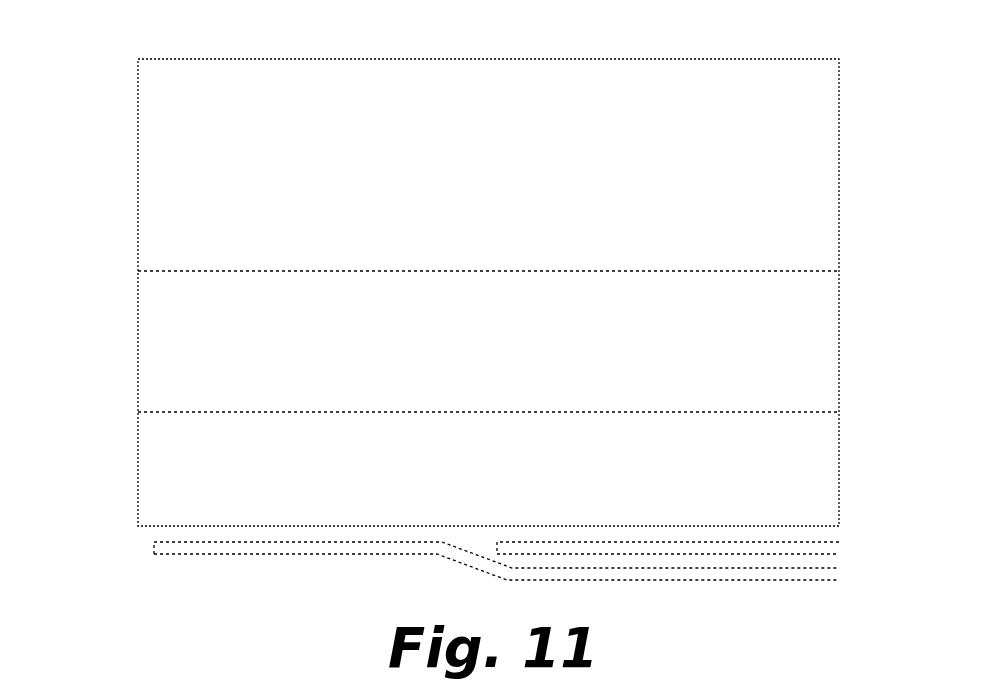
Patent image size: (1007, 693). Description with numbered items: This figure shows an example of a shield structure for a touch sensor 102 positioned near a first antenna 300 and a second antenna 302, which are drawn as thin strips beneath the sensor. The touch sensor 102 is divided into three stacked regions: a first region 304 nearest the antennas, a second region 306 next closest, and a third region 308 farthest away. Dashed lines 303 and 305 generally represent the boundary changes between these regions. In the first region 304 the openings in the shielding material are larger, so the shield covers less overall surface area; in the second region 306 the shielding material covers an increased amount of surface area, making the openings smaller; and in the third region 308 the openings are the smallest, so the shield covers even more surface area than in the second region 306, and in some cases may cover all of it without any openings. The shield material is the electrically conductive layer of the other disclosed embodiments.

The touch sensor 102 is at (93, 76).
The first antenna 300 is at (678, 547).
The second antenna 302 is at (279, 553).
The dashed line 303 is at (297, 412).
The first region 304 is at (508, 488).
The dashed line 305 is at (307, 272).
The second region 306 is at (508, 373).
The third region 308 is at (508, 241).